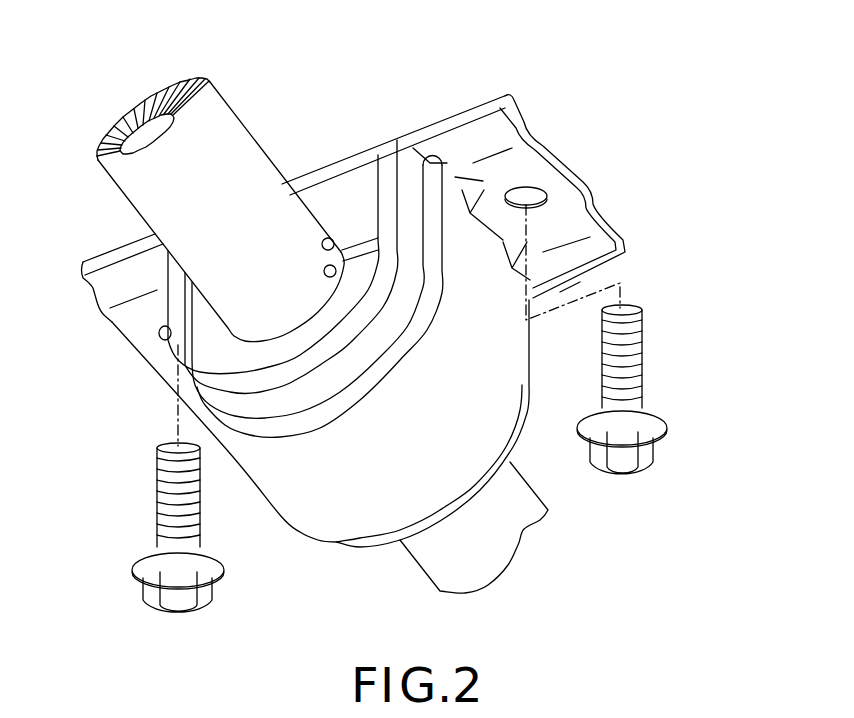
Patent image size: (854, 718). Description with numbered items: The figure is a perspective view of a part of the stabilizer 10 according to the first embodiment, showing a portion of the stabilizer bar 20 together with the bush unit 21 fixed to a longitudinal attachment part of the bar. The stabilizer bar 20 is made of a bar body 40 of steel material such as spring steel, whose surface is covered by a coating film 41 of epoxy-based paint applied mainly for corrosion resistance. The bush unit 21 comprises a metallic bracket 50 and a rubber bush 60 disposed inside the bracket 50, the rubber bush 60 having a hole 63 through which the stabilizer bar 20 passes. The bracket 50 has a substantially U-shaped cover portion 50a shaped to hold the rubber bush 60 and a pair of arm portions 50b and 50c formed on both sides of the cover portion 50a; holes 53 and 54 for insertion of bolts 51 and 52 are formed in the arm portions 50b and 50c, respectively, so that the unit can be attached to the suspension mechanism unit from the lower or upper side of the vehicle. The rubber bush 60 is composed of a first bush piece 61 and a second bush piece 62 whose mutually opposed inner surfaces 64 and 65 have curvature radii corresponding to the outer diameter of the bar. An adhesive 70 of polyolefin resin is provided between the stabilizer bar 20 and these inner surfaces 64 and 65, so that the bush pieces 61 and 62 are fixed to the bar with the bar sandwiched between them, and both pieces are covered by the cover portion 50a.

The stabilizer 10 is at (132, 103).
The stabilizer bar 20 is at (240, 112).
The bush unit 21 is at (347, 558).
The bar body 40 is at (108, 141).
The coating film 41 is at (138, 187).
The bracket 50 is at (512, 442).
The cover portion 50a is at (300, 502).
The arm portion 50b is at (567, 203).
The arm portion 50c is at (137, 327).
The bolt 51 is at (643, 377).
The bolt 52 is at (157, 508).
The hole 53 is at (548, 207).
The hole 54 is at (163, 340).
The rubber bush 60 is at (363, 150).
The first bush piece 61 is at (335, 192).
The second bush piece 62 is at (407, 360).
The hole 63 is at (280, 322).
The inner surface 64 is at (440, 222).
The inner surface 65 is at (350, 242).
The adhesive 70 is at (347, 297).